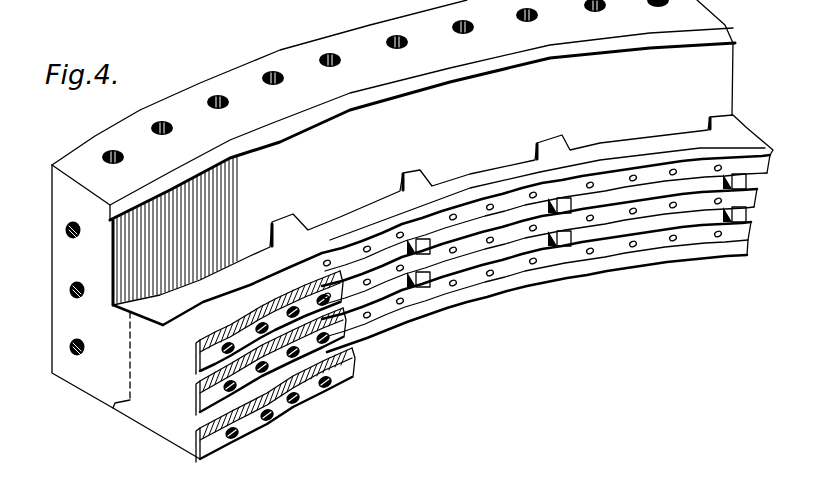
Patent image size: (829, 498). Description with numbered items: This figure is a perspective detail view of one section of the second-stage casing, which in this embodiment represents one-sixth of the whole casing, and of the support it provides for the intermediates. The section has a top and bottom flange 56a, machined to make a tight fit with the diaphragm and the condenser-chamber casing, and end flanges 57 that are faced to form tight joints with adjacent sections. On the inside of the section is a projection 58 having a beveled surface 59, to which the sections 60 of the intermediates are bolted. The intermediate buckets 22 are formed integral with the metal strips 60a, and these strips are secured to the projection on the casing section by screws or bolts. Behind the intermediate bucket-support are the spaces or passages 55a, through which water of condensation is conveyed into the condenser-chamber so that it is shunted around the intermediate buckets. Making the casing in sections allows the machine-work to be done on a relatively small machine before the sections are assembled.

The top and bottom flange 56a is at (127, 134).
The end flange 57 is at (63, 258).
The spaces or passages 55a is at (322, 213).
The intermediate buckets 22 is at (196, 345).
The sections of the intermediates 60 is at (196, 357).
The metal strip 60a is at (249, 380).
The projection 58 is at (135, 363).
The beveled surface 59 is at (163, 433).